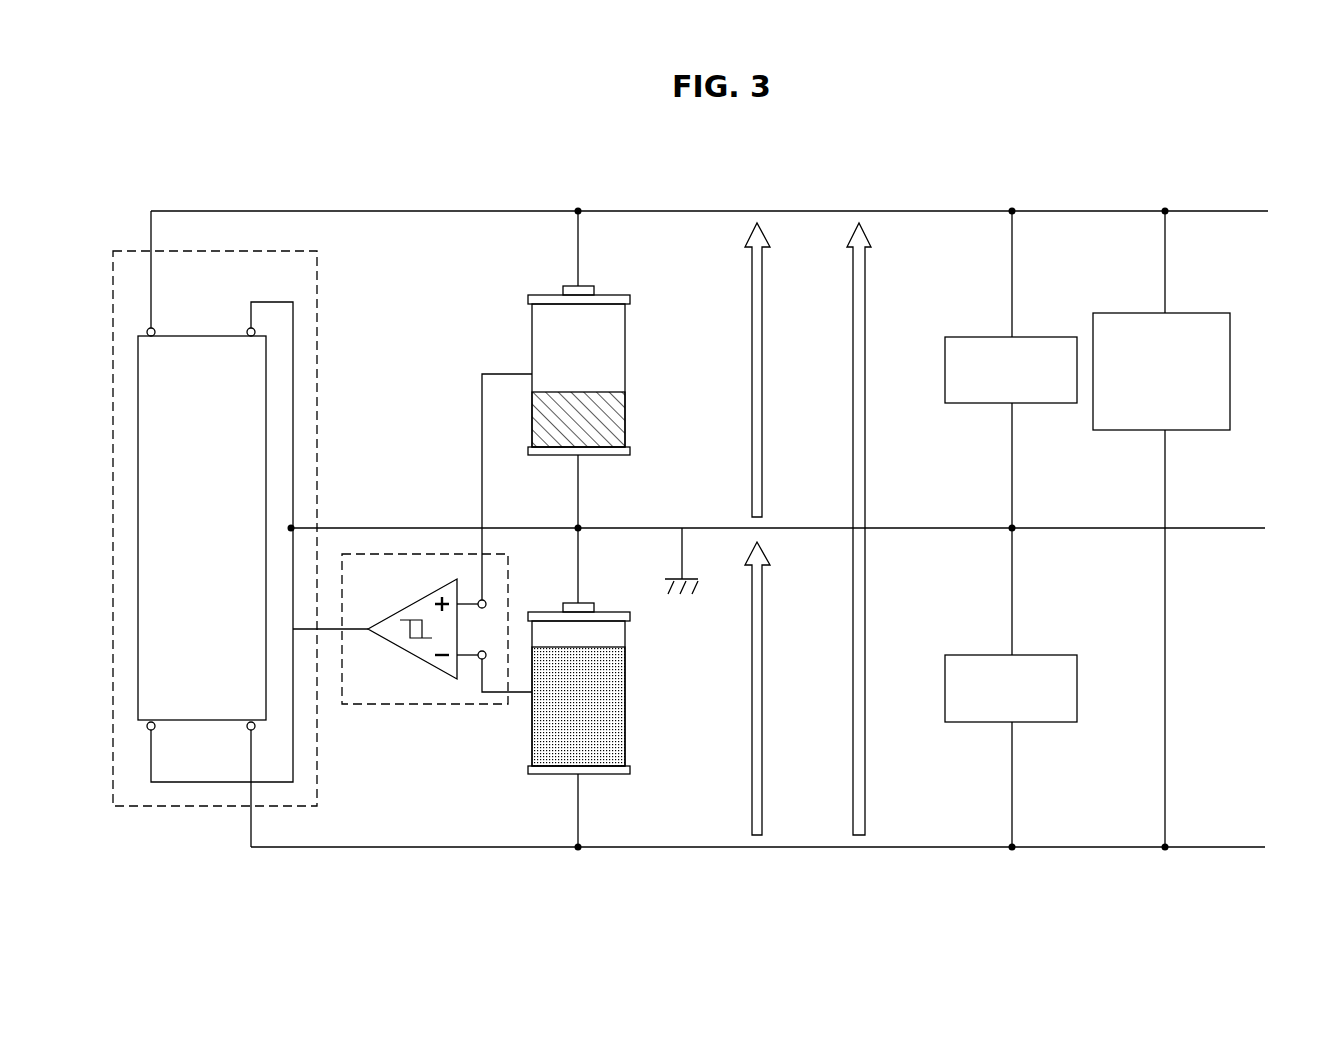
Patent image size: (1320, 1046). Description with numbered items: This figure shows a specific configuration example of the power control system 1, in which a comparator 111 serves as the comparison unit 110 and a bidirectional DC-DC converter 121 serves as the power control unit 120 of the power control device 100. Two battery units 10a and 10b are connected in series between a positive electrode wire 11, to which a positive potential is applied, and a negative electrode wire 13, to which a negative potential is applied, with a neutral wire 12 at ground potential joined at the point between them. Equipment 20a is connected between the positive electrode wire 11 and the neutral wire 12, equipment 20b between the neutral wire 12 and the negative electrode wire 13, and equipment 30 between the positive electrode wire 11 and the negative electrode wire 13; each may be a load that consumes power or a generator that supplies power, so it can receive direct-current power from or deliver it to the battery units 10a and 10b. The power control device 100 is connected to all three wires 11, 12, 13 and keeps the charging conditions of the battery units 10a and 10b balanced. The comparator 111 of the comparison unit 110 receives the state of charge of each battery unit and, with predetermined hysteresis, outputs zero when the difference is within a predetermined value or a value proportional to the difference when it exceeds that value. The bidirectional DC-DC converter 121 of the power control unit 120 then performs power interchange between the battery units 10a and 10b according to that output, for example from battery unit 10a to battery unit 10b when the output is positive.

The power control system 1 is at (1043, 152).
The battery unit 10a is at (610, 294).
The battery unit 10b is at (610, 611).
The positive electrode wire 11 is at (716, 209).
The neutral wire 12 is at (717, 527).
The negative electrode wire 13 is at (716, 846).
The equipment 20a is at (1034, 336).
The equipment 20b is at (1034, 654).
The equipment 30 is at (1188, 312).
The power control device 100 is at (322, 529).
The comparison unit 110 is at (412, 568).
The comparator 111 is at (407, 607).
The power control unit 120 is at (254, 529).
The bidirectional DC-DC converter 121 is at (229, 334).